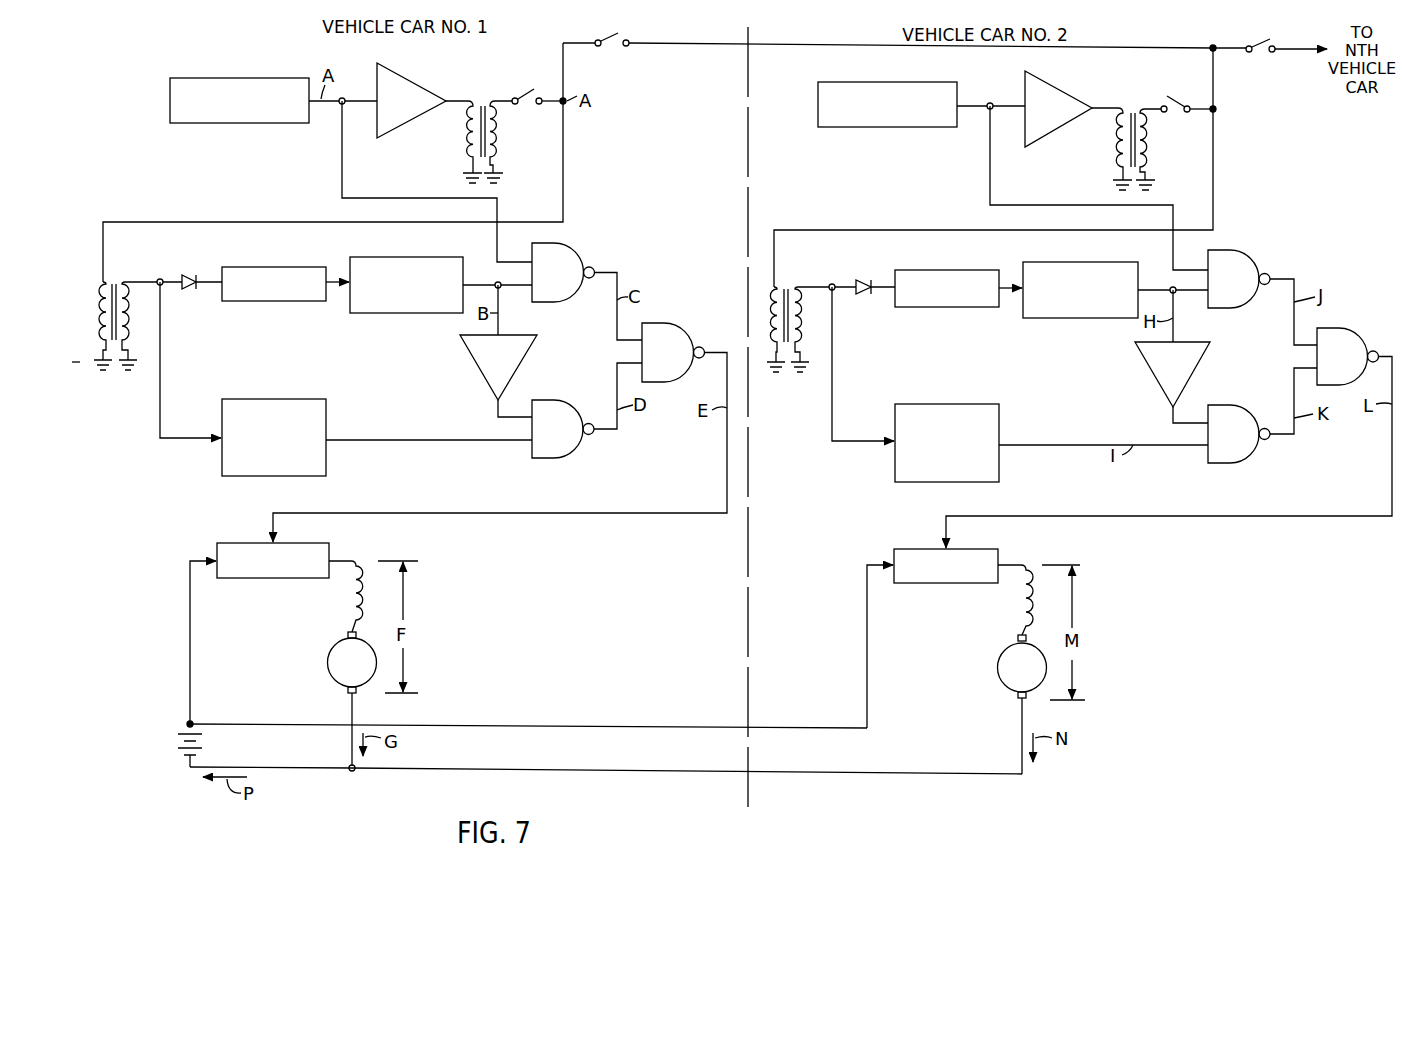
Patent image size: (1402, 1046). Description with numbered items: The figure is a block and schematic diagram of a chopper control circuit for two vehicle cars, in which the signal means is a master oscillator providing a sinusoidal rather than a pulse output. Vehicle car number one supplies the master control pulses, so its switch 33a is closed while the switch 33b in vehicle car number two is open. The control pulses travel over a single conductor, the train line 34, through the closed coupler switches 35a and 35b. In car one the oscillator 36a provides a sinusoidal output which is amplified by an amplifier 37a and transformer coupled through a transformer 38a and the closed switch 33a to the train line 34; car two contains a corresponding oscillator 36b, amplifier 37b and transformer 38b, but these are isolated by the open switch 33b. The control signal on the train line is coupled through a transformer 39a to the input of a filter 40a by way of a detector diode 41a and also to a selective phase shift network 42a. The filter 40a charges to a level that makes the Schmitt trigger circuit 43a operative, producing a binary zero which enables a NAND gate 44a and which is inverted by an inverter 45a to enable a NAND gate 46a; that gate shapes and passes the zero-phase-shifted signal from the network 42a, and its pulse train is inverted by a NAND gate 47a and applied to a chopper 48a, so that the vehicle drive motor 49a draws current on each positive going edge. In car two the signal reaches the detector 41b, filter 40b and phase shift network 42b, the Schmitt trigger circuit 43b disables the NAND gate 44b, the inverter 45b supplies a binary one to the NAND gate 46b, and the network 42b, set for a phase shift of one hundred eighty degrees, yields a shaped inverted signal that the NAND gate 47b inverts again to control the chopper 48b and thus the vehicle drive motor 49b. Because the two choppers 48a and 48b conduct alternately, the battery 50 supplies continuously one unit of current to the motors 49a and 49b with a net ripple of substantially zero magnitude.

The switch 33a is at (525, 93).
The switch 33b is at (1172, 95).
The train line 34 is at (699, 43).
The coupler switch 35a is at (620, 37).
The coupler switch 35b is at (1267, 41).
The oscillator 36a is at (198, 78).
The oscillator 36b is at (850, 82).
The amplifier 37a is at (414, 83).
The amplifier 37b is at (1058, 128).
The transformer 38a is at (482, 104).
The transformer 38b is at (1131, 110).
The transformer 39a is at (118, 284).
The filter 40a is at (250, 301).
The filter 40b is at (930, 307).
The diode 41a is at (190, 276).
The detector 41b is at (862, 295).
The selective phase shift network 42a is at (262, 478).
The phase shift network 42b is at (900, 482).
The Schmitt trigger circuit 43a is at (420, 313).
The Schmitt trigger circuit 43b is at (1076, 318).
The NAND gate 44a is at (580, 260).
The NAND gate 44b is at (1255, 258).
The inverter 45a is at (478, 368).
The inverter 45b is at (1195, 368).
The NAND gate 46a is at (565, 455).
The NAND gate 46b is at (1243, 462).
The NAND gate 47a is at (690, 319).
The NAND gate 47b is at (1367, 325).
The chopper 48a is at (220, 543).
The chopper 48b is at (908, 549).
The vehicle drive motor 49a is at (328, 665).
The vehicle drive motor 49b is at (998, 670).
The battery 50 is at (176, 737).